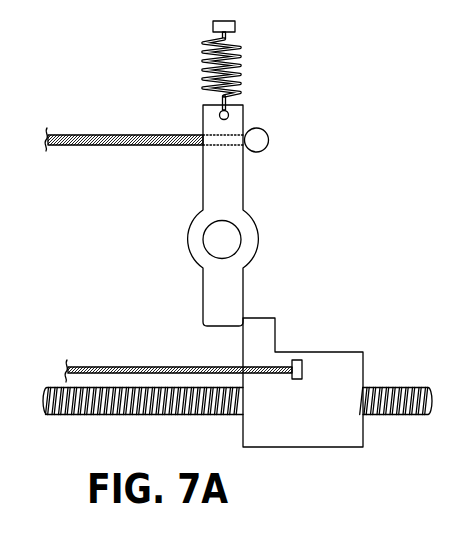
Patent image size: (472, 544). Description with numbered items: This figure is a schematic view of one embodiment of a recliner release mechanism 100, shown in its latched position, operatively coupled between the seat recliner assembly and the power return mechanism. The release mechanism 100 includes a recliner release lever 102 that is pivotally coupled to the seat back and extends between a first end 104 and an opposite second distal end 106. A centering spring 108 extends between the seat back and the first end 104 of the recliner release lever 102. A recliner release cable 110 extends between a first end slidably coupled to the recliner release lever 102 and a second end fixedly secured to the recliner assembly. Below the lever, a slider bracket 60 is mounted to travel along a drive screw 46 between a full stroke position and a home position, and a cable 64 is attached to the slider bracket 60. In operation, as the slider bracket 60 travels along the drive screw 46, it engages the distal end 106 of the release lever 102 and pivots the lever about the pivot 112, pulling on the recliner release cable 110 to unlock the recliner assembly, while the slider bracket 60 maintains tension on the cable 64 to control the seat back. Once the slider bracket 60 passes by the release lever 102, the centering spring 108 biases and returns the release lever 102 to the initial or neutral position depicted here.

The recliner release mechanism 100 is at (320, 114).
The recliner release lever 102 is at (230, 184).
The first end 104 is at (211, 118).
The second distal end 106 is at (217, 318).
The centering spring 108 is at (236, 51).
The recliner release cable 110 is at (100, 141).
The pivot 112 is at (227, 240).
The slider bracket 60 is at (313, 435).
The cable 64 is at (127, 365).
The drive screw 46 is at (70, 405).